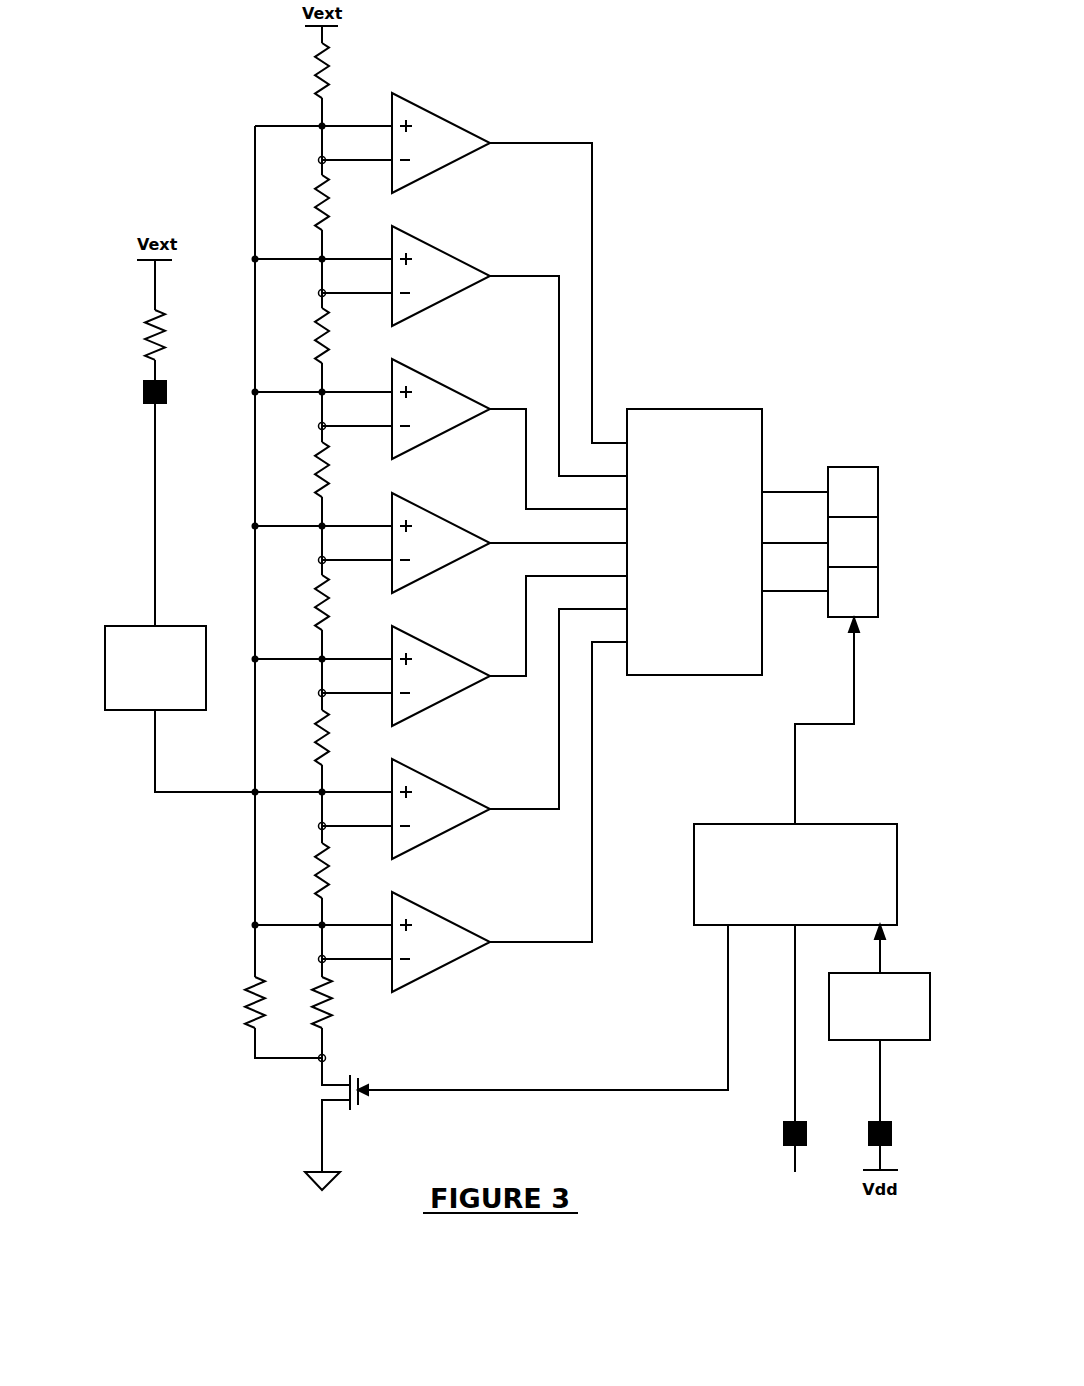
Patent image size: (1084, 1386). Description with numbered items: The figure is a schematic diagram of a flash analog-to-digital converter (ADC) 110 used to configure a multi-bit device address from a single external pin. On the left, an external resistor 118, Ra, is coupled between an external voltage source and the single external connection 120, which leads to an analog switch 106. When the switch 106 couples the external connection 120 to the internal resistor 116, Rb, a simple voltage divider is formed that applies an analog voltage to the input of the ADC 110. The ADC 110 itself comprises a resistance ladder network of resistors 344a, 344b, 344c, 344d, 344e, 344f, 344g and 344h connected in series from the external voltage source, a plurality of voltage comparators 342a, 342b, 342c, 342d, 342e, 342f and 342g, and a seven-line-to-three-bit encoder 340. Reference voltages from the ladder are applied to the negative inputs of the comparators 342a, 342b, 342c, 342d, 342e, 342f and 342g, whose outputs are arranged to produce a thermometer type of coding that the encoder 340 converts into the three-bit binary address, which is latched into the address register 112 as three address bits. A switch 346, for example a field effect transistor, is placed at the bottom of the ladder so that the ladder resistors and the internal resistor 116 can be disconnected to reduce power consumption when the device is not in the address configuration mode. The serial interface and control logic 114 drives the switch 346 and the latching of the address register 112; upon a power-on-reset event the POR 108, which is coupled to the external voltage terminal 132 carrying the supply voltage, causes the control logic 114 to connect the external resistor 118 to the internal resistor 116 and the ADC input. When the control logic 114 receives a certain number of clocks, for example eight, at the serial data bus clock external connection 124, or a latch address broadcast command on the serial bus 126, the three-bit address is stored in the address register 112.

The analog switch 106 is at (172, 626).
The power-on-reset (POR) 108 is at (898, 974).
The analog-to-digital converter (ADC) 110 is at (260, 1124).
The address register 112 is at (880, 545).
The serial interface and control logic 114 is at (898, 872).
The internal resistor 116 is at (248, 1006).
The external resistor 118 is at (165, 321).
The single external connection 120 is at (145, 403).
The serial data bus clock external connection 124 is at (784, 1130).
The serial bus 126 is at (795, 1170).
The external voltage terminal 132 is at (892, 1131).
The 7 line to 3 bit encoder 340 is at (765, 426).
The voltage comparator 342a is at (442, 118).
The voltage comparator 342b is at (442, 251).
The voltage comparator 342c is at (442, 384).
The voltage comparator 342d is at (442, 518).
The voltage comparator 342e is at (442, 651).
The voltage comparator 342f is at (442, 784).
The voltage comparator 342g is at (442, 917).
The resistor 344a is at (313, 79).
The resistor 344b is at (313, 201).
The resistor 344c is at (313, 334).
The resistor 344d is at (313, 467).
The resistor 344e is at (313, 601).
The resistor 344f is at (313, 735).
The resistor 344g is at (313, 869).
The resistor 344h is at (336, 992).
The switch 346 is at (355, 1079).